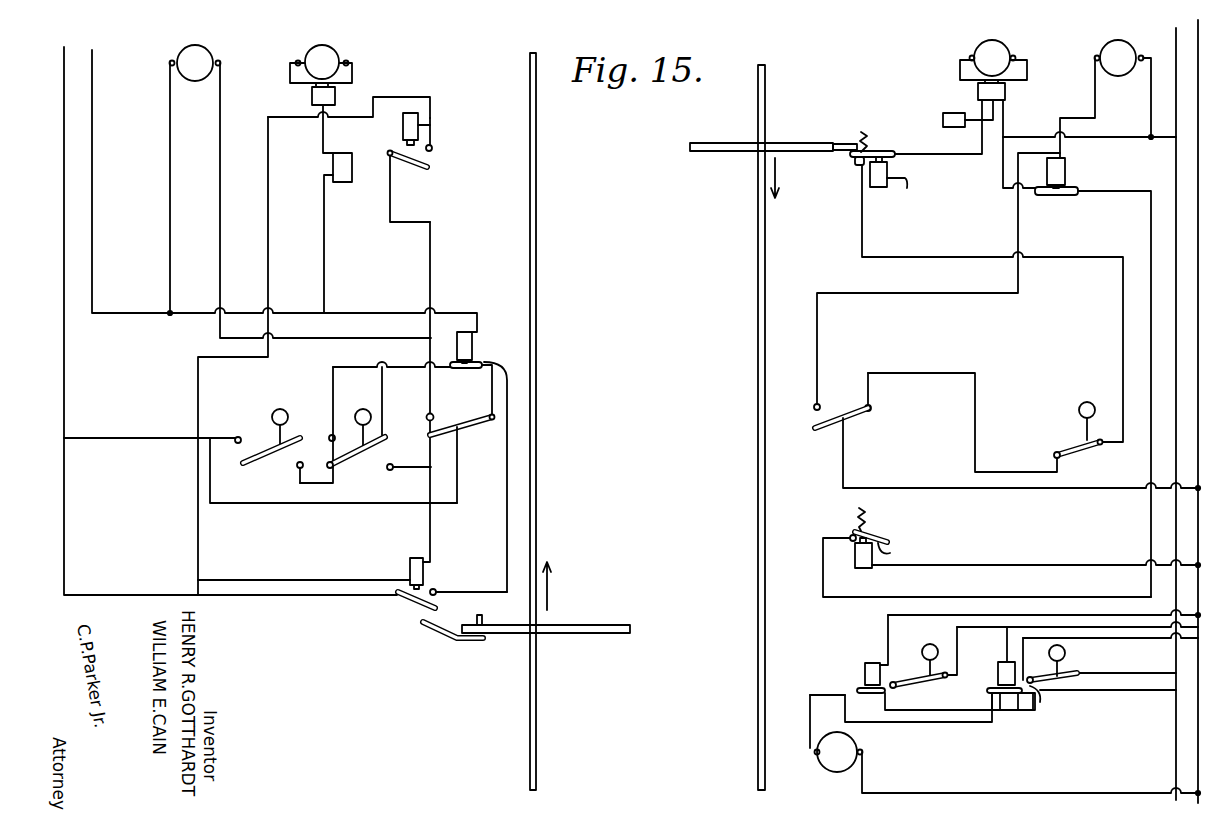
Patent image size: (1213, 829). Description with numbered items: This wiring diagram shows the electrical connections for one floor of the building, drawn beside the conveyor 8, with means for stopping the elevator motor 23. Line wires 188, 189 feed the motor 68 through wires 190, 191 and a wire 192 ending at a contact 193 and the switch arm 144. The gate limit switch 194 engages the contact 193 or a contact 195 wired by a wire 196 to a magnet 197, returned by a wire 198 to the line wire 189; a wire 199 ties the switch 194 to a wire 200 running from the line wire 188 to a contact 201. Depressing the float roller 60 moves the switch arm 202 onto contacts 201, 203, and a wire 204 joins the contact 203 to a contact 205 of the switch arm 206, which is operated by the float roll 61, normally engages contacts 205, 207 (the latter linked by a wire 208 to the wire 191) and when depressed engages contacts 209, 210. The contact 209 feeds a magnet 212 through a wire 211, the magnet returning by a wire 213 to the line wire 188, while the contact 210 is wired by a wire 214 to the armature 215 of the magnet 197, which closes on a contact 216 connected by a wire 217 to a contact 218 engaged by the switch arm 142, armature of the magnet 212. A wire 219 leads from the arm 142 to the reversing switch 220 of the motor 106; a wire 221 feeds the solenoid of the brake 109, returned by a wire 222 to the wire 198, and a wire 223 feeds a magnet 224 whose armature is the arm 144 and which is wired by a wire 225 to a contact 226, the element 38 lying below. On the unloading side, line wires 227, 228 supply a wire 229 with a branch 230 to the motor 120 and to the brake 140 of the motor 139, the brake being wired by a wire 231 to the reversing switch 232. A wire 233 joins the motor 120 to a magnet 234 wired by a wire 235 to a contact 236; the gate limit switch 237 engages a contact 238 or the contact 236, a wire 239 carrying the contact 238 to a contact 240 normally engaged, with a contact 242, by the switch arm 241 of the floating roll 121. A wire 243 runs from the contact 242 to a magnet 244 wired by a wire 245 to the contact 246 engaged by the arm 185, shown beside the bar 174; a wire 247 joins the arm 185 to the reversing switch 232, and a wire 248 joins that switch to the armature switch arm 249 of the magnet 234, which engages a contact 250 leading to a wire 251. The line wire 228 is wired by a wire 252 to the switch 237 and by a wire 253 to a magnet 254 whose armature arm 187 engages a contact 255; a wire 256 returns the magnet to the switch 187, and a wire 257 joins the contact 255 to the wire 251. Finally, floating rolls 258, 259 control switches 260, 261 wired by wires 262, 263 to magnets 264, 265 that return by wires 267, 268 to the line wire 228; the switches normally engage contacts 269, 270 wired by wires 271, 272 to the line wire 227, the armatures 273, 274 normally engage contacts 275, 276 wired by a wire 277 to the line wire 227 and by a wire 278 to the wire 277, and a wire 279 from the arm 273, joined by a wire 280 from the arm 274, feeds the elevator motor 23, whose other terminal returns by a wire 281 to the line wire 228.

The conveyor chain 8 is at (538, 196).
The elevator motor 23 is at (822, 768).
The pusher bar 38 is at (445, 640).
The float roller 60 is at (280, 409).
The float roll 61 is at (363, 409).
The motor 68 is at (213, 52).
The motor 106 is at (335, 55).
The brake 109 is at (338, 153).
The motor 120 is at (1116, 44).
The floating roll 121 is at (1087, 402).
The motor 139 is at (1004, 42).
The brake 140 is at (950, 113).
The switch arm 142 is at (412, 610).
The switch arm 144 is at (428, 166).
The feeler bar 174 is at (853, 140).
The arm 185 is at (882, 151).
The arm 187 is at (880, 537).
The line wire 188 is at (64, 47).
The line wire 189 is at (92, 72).
The wire 190 is at (170, 244).
The wire 191 is at (220, 224).
The wire 192 is at (430, 280).
The contact 193 is at (433, 414).
The limit switch 194 is at (460, 447).
The contact 195 is at (472, 430).
The wire 196 is at (492, 384).
The magnet 197 is at (473, 346).
The wire 198 is at (138, 313).
The wire 199 is at (450, 503).
The wire 200 is at (152, 438).
The contact 201 is at (239, 437).
The switch arm 202 is at (256, 470).
The contact 203 is at (297, 476).
The wire 204 is at (318, 483).
The contact 205 is at (328, 464).
The switch arm 206 is at (355, 466).
The contact 207 is at (385, 437).
The wire 208 is at (383, 392).
The contact 209 is at (392, 464).
The contact 210 is at (329, 438).
The wire 211 is at (431, 487).
The magnet 212 is at (410, 568).
The wire 213 is at (333, 580).
The wire 214 is at (336, 367).
The armature 215 is at (452, 369).
The contact 216 is at (520, 362).
The wire 217 is at (507, 538).
The contact 218 is at (436, 590).
The wire 219 is at (368, 606).
The reversing switch 220 is at (338, 98).
The wire 221 is at (323, 146).
The wire 222 is at (305, 244).
The wire 223 is at (430, 97).
The magnet 224 is at (430, 124).
The wire 225 is at (432, 136).
The contact 226 is at (433, 149).
The line wire 227 is at (1176, 45).
The line wire 228 is at (1198, 180).
The wire 229 is at (1132, 137).
The branch wire 230 is at (1151, 97).
The wire 231 is at (1003, 111).
The reversing switch 232 is at (1006, 94).
The wire 233 is at (1095, 90).
The magnet 234 is at (1066, 170).
The wire 235 is at (1018, 225).
The contact 236 is at (819, 404).
The limit switch 237 is at (832, 422).
The contact 238 is at (871, 408).
The wire 239 is at (960, 373).
The contact 240 is at (1057, 453).
The switch arm 241 is at (1070, 452).
The contact 242 is at (1102, 446).
The wire 243 is at (1123, 350).
The magnet 244 is at (907, 188).
The wire 245 is at (858, 168).
The contact 246 is at (852, 160).
The wire 247 is at (960, 154).
The wire 248 is at (1003, 180).
The switch arm 249 is at (1048, 196).
The contact 250 is at (1073, 196).
The wire 251 is at (1151, 236).
The wire 252 is at (918, 488).
The wire 253 is at (970, 572).
The magnet 254 is at (856, 552).
The contact 255 is at (853, 535).
The wire 256 is at (900, 555).
The wire 257 is at (930, 597).
The floating roll 258 is at (939, 648).
The floating roll 259 is at (1065, 654).
The switch arm 260 is at (936, 640).
The switch arm 261 is at (1060, 678).
The wire 262 is at (915, 674).
The wire 263 is at (1050, 660).
The magnet 264 is at (865, 665).
The magnet 265 is at (998, 674).
The wire 267 is at (1070, 615).
The wire 268 is at (1120, 638).
The contact 269 is at (945, 678).
The contact 270 is at (1054, 702).
The wire 271 is at (1012, 637).
The wire 272 is at (1168, 660).
The armature 273 is at (870, 693).
The armature 274 is at (998, 712).
The contact 275 is at (885, 696).
The contact 276 is at (1018, 712).
The wire 277 is at (1156, 690).
The wire 278 is at (1032, 712).
The wire 279 is at (828, 695).
The wire 280 is at (914, 722).
The wire 281 is at (976, 793).